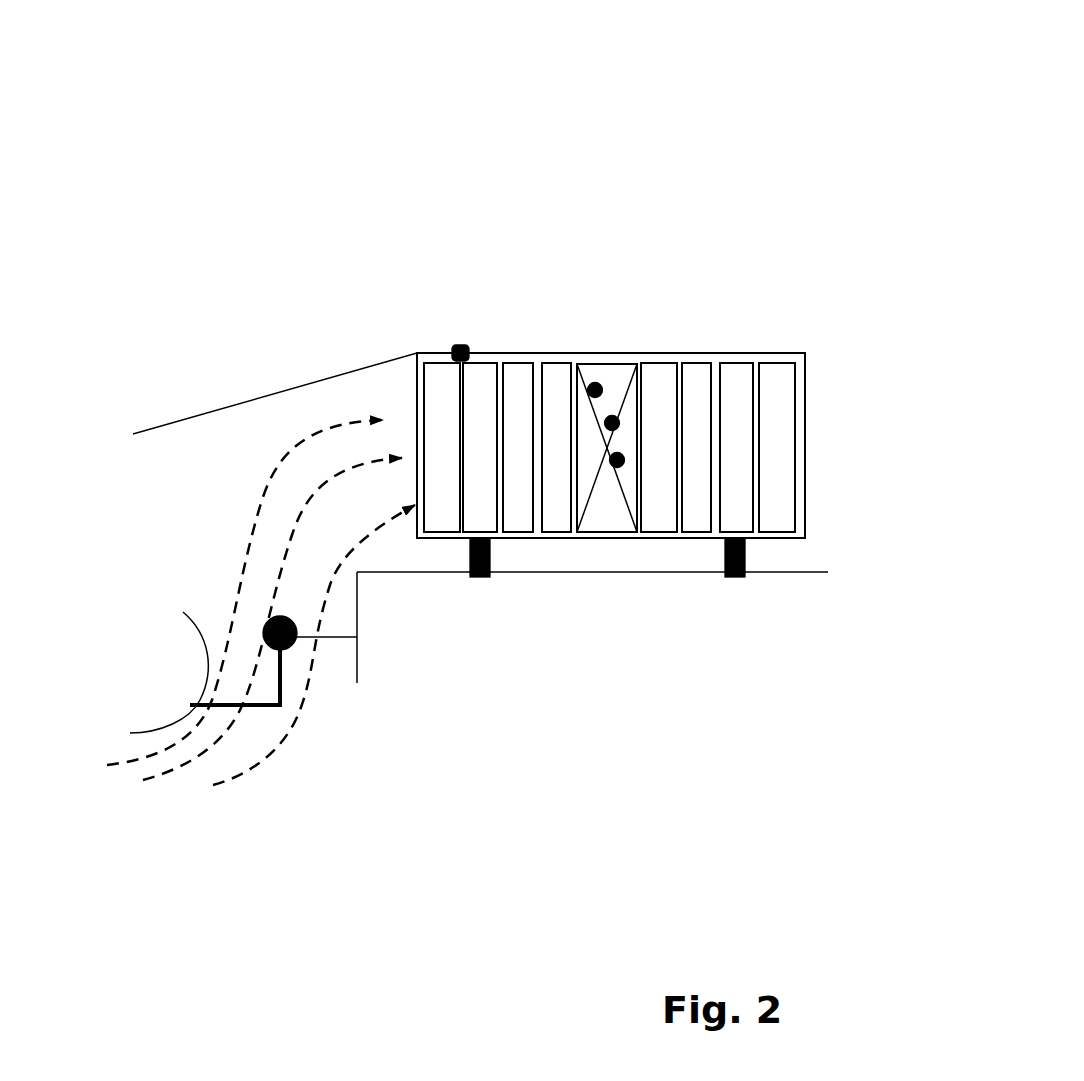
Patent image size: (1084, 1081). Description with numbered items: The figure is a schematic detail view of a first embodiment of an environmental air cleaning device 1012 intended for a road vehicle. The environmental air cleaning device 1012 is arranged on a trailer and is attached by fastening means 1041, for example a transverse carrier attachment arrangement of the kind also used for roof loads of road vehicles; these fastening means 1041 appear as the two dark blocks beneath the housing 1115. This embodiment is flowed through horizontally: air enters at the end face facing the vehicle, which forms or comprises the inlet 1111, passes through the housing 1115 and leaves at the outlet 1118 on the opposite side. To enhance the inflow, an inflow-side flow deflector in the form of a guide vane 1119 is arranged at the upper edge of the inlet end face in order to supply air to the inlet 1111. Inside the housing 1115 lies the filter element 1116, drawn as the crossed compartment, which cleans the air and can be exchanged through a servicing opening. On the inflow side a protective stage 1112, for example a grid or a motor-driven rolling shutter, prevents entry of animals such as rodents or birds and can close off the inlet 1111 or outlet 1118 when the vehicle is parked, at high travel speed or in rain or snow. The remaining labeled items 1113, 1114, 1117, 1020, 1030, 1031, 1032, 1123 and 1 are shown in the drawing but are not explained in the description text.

The environmental air cleaning device 1012 is at (442, 192).
The housing 1115 is at (805, 355).
The inlet 1111 is at (437, 455).
The protective stage 1112 is at (482, 477).
The filter plate 1113 is at (517, 507).
The plate element 1114 is at (558, 360).
The filter element 1116 is at (610, 488).
The particles 1020 is at (620, 430).
The outlet 1118 is at (780, 460).
The sensor 1117 is at (452, 350).
The guide vane 1119 is at (172, 420).
The fastening means 1041 is at (478, 582).
The sensor unit 1030 is at (252, 622).
The connection line 1032 is at (340, 638).
The air flow 1123 is at (254, 600).
The air stream 1031 is at (207, 715).
The vehicle 1 is at (166, 704).